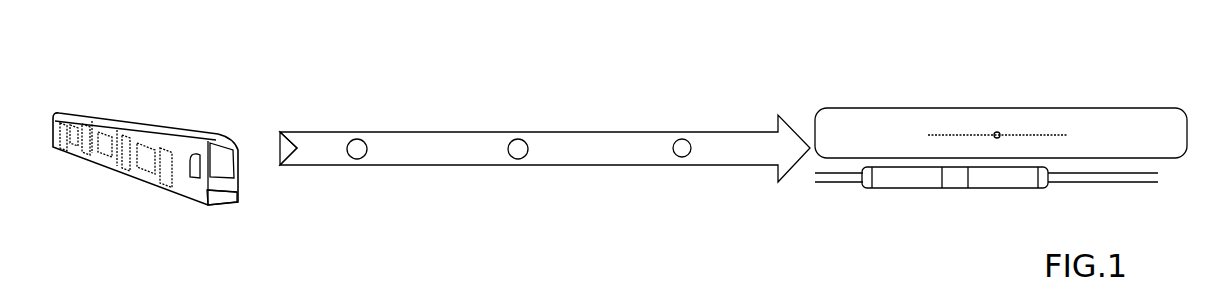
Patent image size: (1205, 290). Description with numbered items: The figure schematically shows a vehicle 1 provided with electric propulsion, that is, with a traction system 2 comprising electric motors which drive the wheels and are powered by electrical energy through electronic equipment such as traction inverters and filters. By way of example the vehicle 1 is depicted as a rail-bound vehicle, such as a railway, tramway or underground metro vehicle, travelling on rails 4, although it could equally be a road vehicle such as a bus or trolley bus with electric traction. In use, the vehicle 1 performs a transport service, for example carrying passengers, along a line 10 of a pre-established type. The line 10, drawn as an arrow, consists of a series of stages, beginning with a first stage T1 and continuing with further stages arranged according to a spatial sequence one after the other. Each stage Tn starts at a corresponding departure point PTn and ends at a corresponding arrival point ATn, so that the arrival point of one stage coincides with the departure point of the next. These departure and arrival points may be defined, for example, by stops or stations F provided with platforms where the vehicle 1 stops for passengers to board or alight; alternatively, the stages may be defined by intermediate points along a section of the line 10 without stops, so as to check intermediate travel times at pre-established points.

The vehicle 1 is at (163, 93).
The traction system 2 is at (225, 206).
The line 10 is at (732, 140).
The first stage T1 is at (320, 143).
The stage Tn is at (490, 140).
The departure point PTn is at (517, 159).
The arrival point ATn is at (680, 157).
The stop or station F is at (1102, 120).
The rails 4 is at (1100, 185).